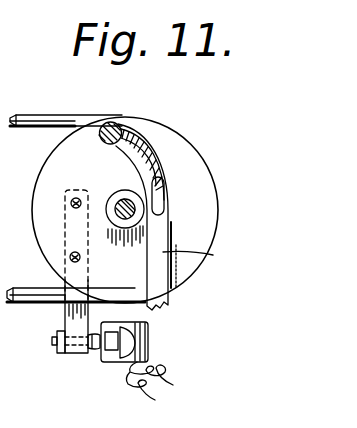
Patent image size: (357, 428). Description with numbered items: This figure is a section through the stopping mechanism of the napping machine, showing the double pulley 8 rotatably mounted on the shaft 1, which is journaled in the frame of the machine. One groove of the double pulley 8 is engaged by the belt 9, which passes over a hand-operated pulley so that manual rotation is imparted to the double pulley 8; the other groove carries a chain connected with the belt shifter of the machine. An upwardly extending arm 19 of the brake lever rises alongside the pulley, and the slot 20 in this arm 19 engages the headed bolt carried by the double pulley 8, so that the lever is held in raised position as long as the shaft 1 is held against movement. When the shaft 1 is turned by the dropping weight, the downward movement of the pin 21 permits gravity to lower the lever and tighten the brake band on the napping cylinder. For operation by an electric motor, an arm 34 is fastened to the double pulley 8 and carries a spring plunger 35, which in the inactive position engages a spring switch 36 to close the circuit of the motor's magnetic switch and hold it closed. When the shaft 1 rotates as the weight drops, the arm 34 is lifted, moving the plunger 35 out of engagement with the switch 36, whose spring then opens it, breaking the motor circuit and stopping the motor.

The shaft 1 is at (122, 198).
The double pulley 8 is at (53, 170).
The belt 9 is at (60, 100).
The upwardly extending arm 19 is at (200, 261).
The slot 20 is at (160, 178).
The pin 21 is at (130, 98).
The arm 34 is at (72, 318).
The spring plunger 35 is at (99, 350).
The spring switch 36 is at (148, 352).